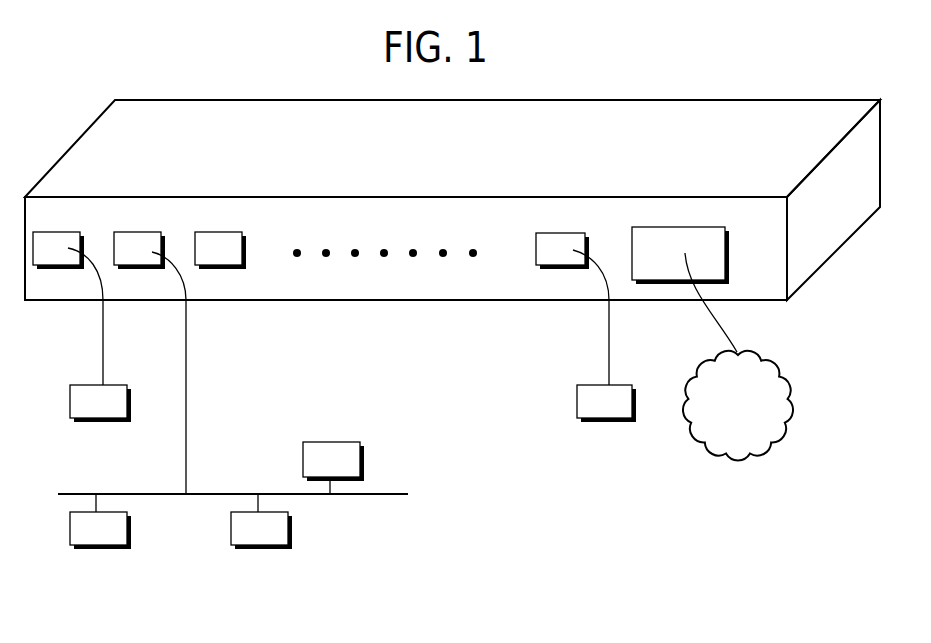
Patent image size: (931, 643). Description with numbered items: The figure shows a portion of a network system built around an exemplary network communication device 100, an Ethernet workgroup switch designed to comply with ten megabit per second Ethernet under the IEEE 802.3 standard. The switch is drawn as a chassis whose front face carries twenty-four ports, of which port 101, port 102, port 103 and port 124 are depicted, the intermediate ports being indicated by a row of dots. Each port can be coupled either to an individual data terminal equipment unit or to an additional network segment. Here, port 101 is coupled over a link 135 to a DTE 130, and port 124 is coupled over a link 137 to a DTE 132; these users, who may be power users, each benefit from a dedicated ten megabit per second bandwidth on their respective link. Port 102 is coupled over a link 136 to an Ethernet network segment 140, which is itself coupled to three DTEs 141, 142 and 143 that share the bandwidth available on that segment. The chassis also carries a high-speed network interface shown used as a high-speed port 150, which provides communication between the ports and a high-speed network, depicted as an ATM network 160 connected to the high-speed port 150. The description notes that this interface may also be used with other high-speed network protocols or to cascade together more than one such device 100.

The network communication device 100 is at (829, 133).
The port 101 is at (50, 232).
The port 102 is at (131, 232).
The port 103 is at (212, 232).
The port 124 is at (553, 233).
The high-speed port 150 is at (727, 253).
The ATM network 160 is at (723, 437).
The link 135 is at (103, 347).
The link 136 is at (186, 348).
The link 137 is at (609, 347).
The data terminal equipment unit 130 is at (83, 420).
The data terminal equipment unit 132 is at (590, 420).
The Ethernet network segment 140 is at (388, 496).
The data terminal equipment unit 141 is at (103, 547).
The data terminal equipment unit 142 is at (265, 547).
The data terminal equipment unit 143 is at (340, 441).